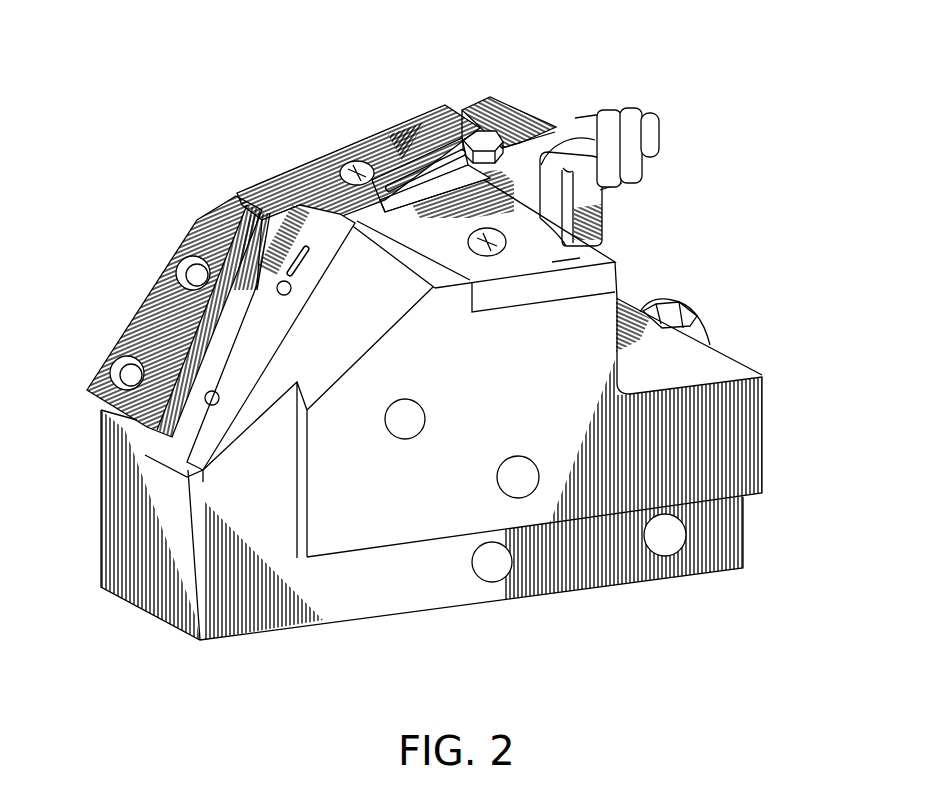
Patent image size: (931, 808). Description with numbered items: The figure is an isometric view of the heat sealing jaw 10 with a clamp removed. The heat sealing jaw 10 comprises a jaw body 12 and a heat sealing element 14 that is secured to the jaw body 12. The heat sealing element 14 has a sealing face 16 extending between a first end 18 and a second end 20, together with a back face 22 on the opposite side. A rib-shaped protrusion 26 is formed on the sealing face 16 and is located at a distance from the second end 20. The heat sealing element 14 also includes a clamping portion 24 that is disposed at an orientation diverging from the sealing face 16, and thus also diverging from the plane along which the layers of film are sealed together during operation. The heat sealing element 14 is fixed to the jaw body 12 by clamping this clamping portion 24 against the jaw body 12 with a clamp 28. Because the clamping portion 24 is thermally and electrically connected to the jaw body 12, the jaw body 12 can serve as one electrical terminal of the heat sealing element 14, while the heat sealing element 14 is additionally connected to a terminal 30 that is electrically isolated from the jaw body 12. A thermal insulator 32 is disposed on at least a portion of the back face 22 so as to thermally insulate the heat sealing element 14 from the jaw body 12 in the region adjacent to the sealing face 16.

The heat sealing jaw 10 is at (208, 84).
The jaw body 12 is at (283, 607).
The heat sealing element 14 is at (455, 198).
The sealing face 16 is at (382, 187).
The first end 18 is at (458, 157).
The second end 20 is at (318, 203).
The back face 22 is at (362, 220).
The clamping portion 24 is at (316, 236).
The rib-shaped protrusion 26 is at (423, 160).
The clamp 28 is at (144, 308).
The terminal 30 is at (508, 133).
The thermal insulator 32 is at (550, 262).